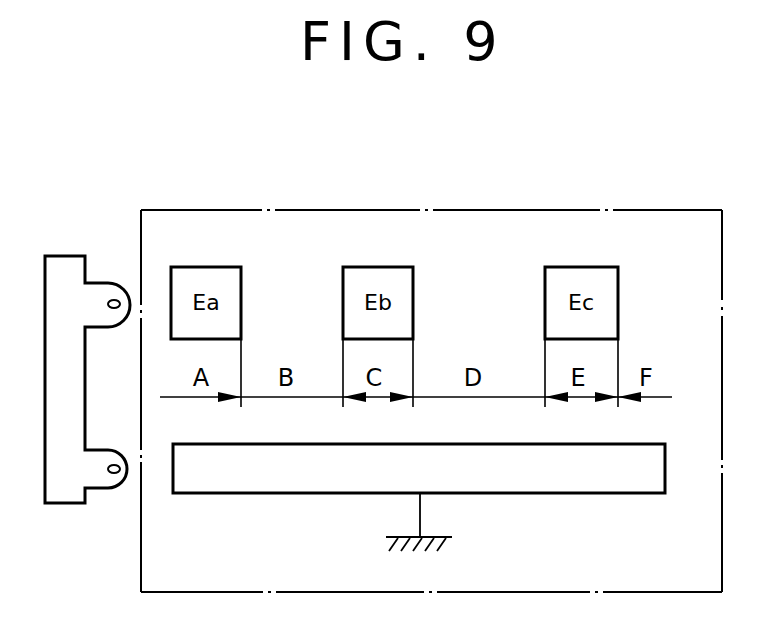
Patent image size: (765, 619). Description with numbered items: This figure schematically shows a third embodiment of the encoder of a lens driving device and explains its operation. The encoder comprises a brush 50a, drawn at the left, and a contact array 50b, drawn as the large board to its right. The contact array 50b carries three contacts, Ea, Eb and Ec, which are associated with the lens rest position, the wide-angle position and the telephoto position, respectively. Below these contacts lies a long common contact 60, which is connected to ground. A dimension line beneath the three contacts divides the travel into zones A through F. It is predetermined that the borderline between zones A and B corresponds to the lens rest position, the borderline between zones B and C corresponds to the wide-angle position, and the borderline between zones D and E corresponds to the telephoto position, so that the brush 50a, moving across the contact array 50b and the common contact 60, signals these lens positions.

The brush 50a is at (62, 256).
The contact array 50b is at (393, 209).
The common contact 60 is at (604, 493).